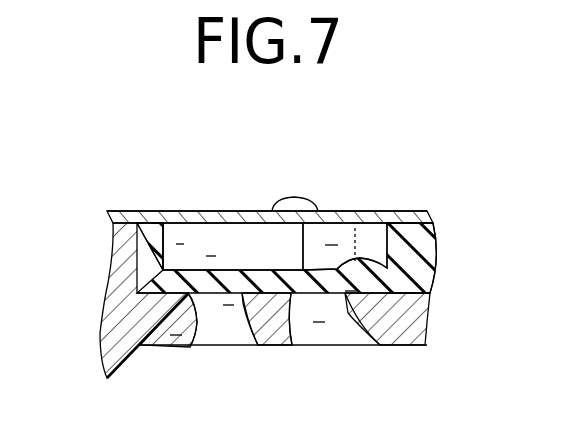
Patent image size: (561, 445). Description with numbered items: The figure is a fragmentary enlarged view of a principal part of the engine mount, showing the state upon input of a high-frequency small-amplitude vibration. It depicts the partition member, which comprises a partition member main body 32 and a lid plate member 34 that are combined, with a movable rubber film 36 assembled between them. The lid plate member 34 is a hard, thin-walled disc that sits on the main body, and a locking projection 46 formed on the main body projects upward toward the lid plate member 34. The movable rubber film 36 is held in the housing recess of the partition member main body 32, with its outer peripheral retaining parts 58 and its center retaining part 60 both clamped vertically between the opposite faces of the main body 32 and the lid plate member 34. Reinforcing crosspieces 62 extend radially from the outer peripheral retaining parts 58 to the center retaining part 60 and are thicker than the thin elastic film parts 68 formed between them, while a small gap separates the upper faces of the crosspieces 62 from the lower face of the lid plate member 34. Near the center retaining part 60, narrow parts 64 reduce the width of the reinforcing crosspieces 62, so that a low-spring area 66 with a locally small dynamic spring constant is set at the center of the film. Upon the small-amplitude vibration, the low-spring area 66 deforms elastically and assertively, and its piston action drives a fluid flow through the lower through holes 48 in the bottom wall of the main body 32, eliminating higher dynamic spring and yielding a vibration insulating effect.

The partition member main body 32 is at (120, 325).
The lid plate member 34 is at (152, 219).
The movable rubber film 36 is at (400, 203).
The locking projection 46 is at (297, 200).
The lower through holes 48 is at (190, 347).
The outer peripheral retaining parts 58 is at (140, 226).
The center retaining part 60 is at (407, 246).
The reinforcing crosspieces 62 is at (199, 250).
The narrow parts 64 is at (335, 237).
The low-spring area 66 is at (384, 303).
The elastic film parts 68 is at (233, 285).